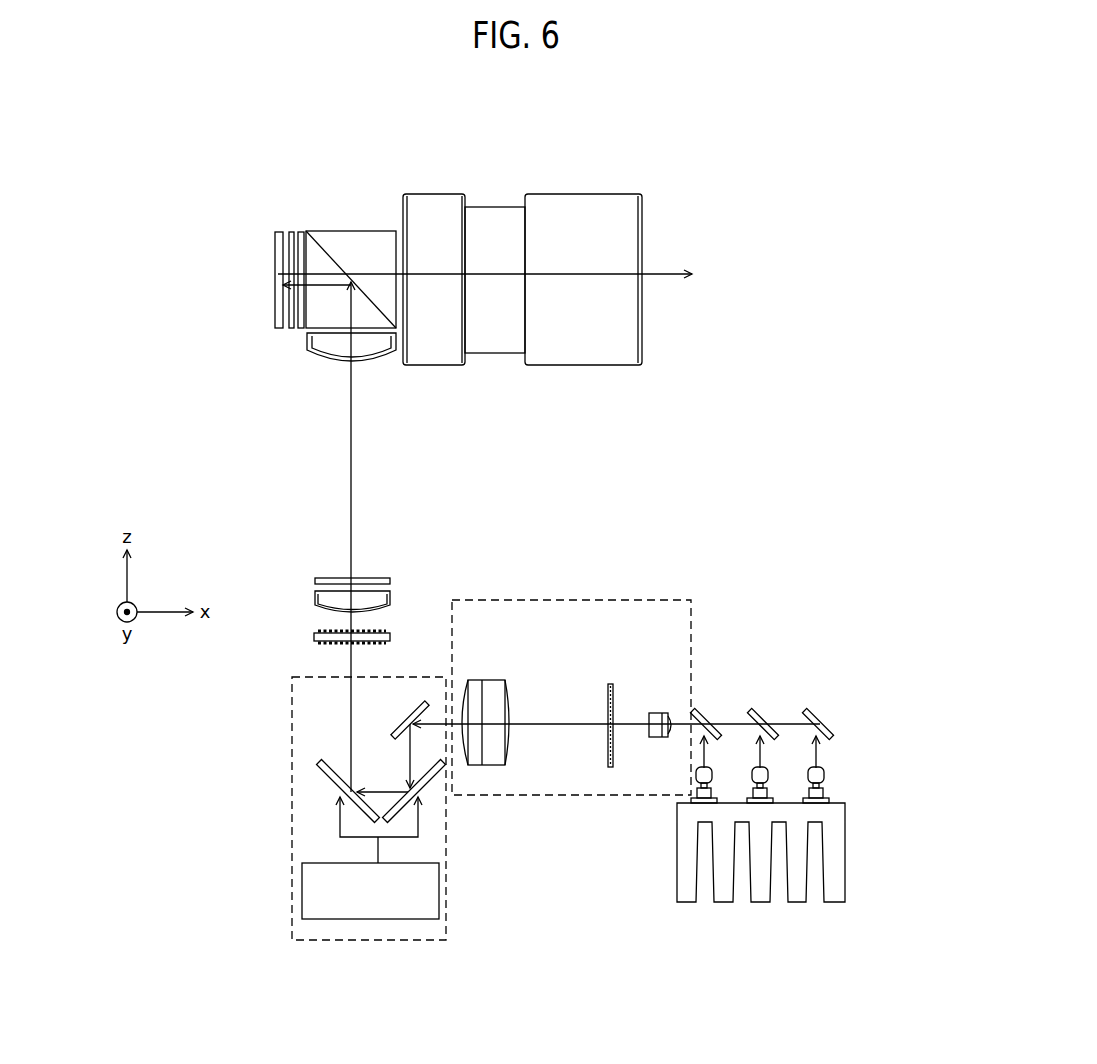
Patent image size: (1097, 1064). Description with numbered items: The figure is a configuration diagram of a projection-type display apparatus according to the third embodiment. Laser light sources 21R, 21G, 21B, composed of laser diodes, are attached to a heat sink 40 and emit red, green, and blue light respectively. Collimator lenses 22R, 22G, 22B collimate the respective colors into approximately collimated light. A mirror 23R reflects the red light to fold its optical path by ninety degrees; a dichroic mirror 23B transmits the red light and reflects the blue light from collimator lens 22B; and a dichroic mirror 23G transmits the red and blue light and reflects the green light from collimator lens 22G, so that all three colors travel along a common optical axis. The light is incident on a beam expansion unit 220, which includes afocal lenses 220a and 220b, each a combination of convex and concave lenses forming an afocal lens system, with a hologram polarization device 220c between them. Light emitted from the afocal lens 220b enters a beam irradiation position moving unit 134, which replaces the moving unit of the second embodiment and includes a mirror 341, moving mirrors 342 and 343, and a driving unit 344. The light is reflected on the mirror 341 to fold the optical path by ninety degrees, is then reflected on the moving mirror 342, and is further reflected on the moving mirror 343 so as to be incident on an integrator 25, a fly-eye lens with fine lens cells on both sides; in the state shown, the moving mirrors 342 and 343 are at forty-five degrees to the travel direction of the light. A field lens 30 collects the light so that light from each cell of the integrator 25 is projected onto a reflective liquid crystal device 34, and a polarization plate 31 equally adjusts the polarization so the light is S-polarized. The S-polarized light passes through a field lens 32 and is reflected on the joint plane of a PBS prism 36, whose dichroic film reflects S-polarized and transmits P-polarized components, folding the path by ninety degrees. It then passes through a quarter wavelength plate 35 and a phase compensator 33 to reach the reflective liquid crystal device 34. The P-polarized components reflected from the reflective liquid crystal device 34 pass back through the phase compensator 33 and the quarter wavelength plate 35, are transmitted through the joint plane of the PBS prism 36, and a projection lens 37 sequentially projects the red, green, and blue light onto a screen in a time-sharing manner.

The laser light source 21G is at (698, 791).
The laser light source 21B is at (751, 792).
The laser light source 21R is at (829, 794).
The collimator lens 22G is at (696, 771).
The collimator lens 22B is at (770, 770).
The collimator lens 22R is at (825, 775).
The dichroic mirror 23G is at (705, 712).
The dichroic mirror 23B is at (765, 712).
The mirror 23R is at (822, 712).
The integrator 25 is at (315, 636).
The field lens 30 is at (315, 595).
The polarization plate 31 is at (315, 580).
The field lens 32 is at (323, 364).
The phase compensator 33 is at (291, 231).
The reflective liquid crystal device 34 is at (275, 256).
The quarter wavelength plate 35 is at (301, 231).
The PBS prism 36 is at (387, 302).
The projection lens 37 is at (494, 215).
The heat sink 40 is at (763, 890).
The beam irradiation position moving unit 134 is at (327, 942).
The beam expansion unit 220 is at (606, 600).
The afocal lens 220a is at (656, 713).
The afocal lens 220b is at (495, 760).
The hologram polarization device 220c is at (610, 684).
The mirror 341 is at (418, 695).
The moving mirror 342 is at (428, 792).
The moving mirror 343 is at (333, 781).
The driving unit 344 is at (407, 920).